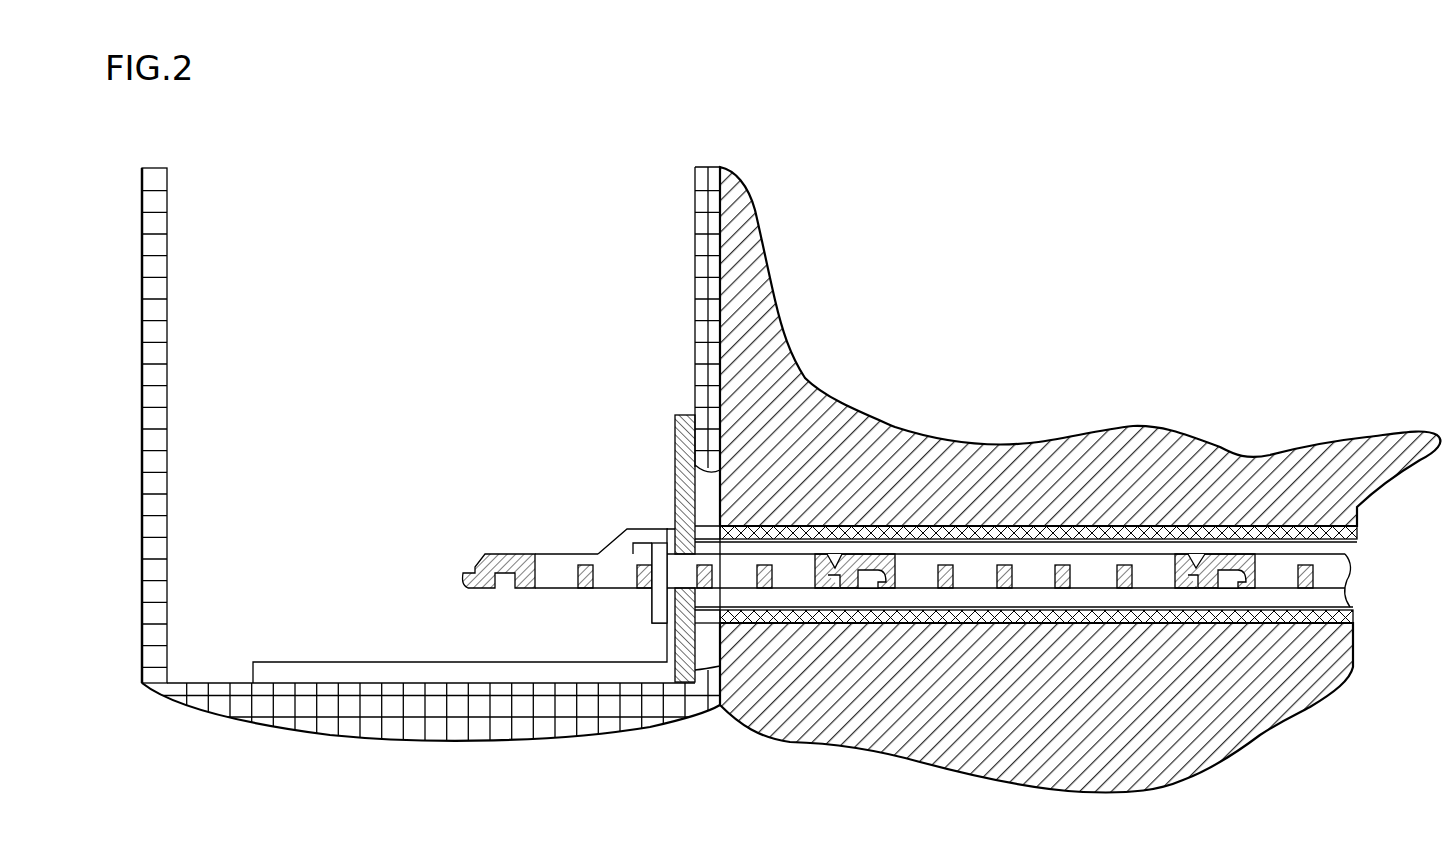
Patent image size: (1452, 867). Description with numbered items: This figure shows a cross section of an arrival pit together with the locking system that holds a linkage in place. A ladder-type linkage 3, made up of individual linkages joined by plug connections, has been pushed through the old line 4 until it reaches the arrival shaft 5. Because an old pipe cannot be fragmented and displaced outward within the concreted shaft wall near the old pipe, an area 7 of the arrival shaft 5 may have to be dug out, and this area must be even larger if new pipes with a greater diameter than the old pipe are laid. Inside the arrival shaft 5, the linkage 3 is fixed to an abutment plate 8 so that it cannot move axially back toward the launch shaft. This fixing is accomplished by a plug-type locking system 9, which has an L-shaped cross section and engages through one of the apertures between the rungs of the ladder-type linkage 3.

The linkage 3 is at (832, 582).
The old line 4 is at (1143, 535).
The arrival shaft 5 is at (159, 422).
The area 7 is at (708, 652).
The abutment plate 8 is at (673, 460).
The plug-type locking system 9 is at (657, 607).